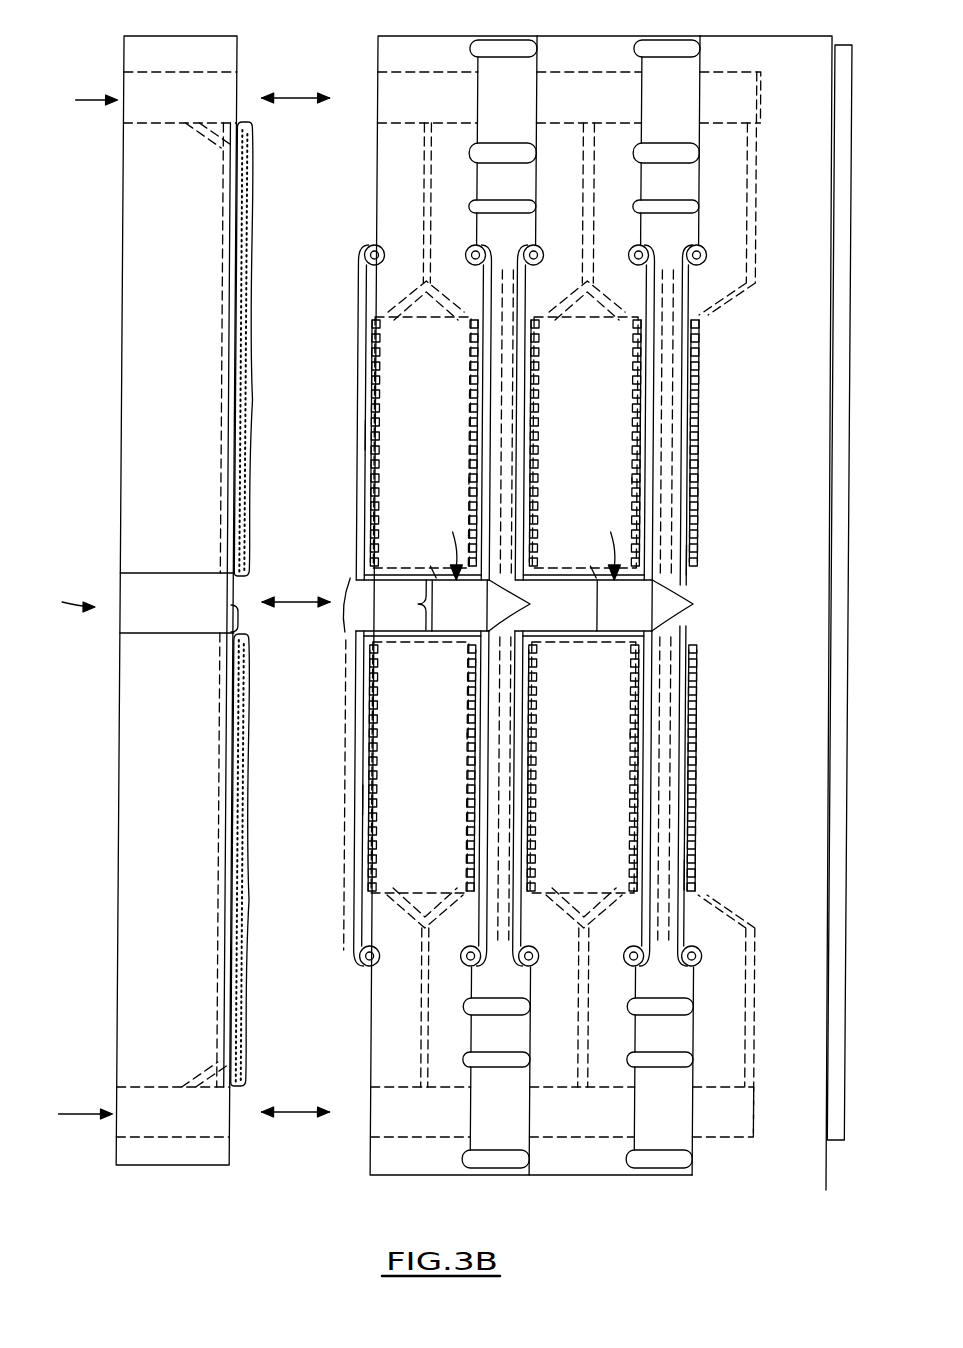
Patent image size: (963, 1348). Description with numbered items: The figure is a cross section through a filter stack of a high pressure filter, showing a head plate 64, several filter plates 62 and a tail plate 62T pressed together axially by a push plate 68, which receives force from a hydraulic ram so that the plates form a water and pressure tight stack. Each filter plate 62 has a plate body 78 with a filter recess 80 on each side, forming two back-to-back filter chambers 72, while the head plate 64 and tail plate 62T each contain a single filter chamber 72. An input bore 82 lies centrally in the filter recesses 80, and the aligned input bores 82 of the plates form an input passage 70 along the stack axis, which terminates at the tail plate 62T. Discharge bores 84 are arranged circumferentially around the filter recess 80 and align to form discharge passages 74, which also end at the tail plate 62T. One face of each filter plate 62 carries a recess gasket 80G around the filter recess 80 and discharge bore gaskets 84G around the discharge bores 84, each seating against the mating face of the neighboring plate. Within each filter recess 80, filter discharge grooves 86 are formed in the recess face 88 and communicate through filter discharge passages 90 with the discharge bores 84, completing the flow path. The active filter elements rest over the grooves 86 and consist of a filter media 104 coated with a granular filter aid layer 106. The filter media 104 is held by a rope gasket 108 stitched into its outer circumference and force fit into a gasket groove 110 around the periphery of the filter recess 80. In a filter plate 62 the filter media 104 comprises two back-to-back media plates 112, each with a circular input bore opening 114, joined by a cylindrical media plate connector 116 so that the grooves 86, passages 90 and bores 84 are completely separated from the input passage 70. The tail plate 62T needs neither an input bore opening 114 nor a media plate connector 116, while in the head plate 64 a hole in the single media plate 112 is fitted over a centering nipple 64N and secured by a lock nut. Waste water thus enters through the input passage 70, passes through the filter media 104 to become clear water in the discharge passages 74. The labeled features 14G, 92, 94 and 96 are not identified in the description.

The groove 14G is at (466, 1060).
The filter plate 62 is at (428, 34).
The tail plate 62T is at (763, 34).
The head plate 64 is at (216, 34).
The centering nipple 64N is at (238, 640).
The push plate 68 is at (850, 340).
The input passage 70 is at (300, 600).
The filter chamber 72 is at (382, 480).
The discharge passages 74 is at (300, 100).
The plate body 78 is at (432, 480).
The filter recess 80 is at (447, 614).
The recess gasket 80G is at (466, 155).
The input bore 82 is at (33, 610).
The discharge bores 84 is at (730, 1117).
The discharge bore gaskets 84G is at (634, 44).
The filter discharge grooves 86 is at (228, 300).
The recess face 88 is at (370, 435).
The filter discharge passages 90 is at (205, 148).
The inner edge 92 is at (468, 480).
The panel strip 94 is at (397, 430).
The panel strip 96 is at (397, 392).
The filter media 104 is at (220, 248).
The granular filter aid layer 106 is at (250, 302).
The rope gasket 108 is at (525, 250).
The gasket groove 110 is at (704, 262).
The media plate 112 is at (250, 642).
The input bore opening 114 is at (511, 543).
The media plate connector 116 is at (430, 566).